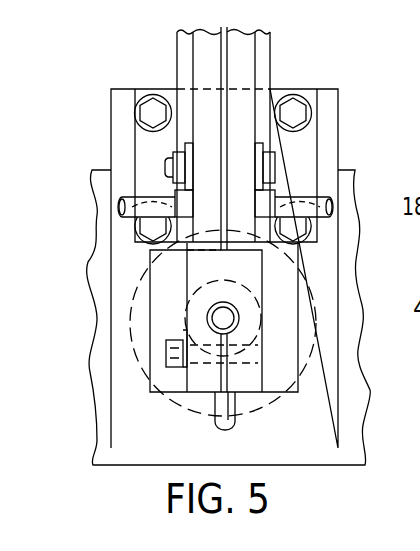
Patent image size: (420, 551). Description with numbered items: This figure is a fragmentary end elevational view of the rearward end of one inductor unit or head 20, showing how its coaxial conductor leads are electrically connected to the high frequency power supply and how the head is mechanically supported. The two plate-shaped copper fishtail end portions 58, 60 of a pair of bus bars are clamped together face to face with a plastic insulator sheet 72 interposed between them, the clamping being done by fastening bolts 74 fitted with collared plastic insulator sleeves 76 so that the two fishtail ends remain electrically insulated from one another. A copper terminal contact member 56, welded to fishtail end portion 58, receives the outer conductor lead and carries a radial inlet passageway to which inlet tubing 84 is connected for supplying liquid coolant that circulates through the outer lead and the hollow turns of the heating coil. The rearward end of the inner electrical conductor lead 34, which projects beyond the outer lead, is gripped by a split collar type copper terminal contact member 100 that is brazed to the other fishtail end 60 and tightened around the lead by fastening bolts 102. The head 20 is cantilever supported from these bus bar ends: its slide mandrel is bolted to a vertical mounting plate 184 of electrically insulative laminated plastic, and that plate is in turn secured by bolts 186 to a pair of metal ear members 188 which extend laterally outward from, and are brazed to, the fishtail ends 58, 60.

The inductor unit or head 20 is at (318, 355).
The inner electrical conductor lead 34 is at (205, 318).
The terminal contact member 56 is at (298, 283).
The fishtail end portion 58 is at (245, 53).
The fishtail end portion 60 is at (198, 53).
The plastic insulator sheet 72 is at (223, 75).
The fastening bolt 74 is at (267, 158).
The collared plastic insulator sleeve 76 is at (178, 153).
The inlet tubing 84 is at (233, 420).
The terminal contact member 100 is at (187, 283).
The fastening bolt 102 is at (167, 348).
The vertical mounting plate 184 is at (332, 100).
The bolt 186 is at (150, 107).
The metal ear member 188 is at (133, 132).